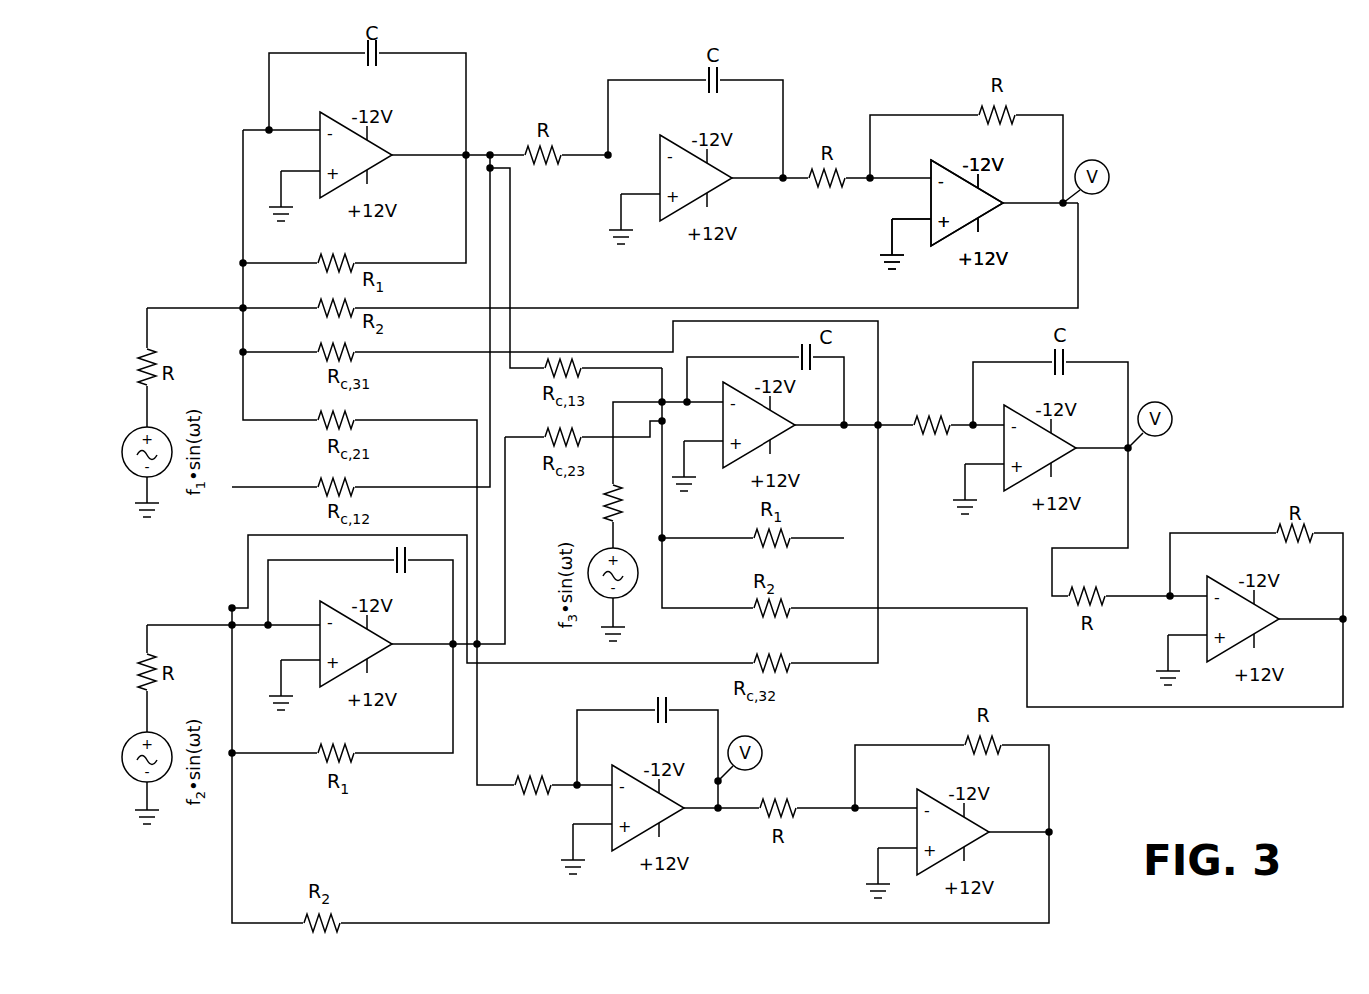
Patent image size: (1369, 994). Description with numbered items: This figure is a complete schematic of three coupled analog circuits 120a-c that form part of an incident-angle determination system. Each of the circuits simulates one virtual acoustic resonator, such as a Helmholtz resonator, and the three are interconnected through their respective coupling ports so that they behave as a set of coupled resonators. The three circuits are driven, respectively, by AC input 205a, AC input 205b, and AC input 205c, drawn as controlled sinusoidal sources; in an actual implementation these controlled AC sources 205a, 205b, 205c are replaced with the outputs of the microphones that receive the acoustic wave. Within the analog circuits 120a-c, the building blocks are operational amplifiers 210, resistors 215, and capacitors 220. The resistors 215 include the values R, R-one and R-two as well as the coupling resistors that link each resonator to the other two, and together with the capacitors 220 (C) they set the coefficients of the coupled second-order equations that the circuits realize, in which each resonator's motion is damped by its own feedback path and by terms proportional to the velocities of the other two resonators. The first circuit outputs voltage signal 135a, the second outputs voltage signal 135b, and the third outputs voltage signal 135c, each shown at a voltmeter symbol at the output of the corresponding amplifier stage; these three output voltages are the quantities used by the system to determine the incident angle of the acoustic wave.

The coupled analog circuits 120a-c is at (1195, 165).
The voltage signal 135a is at (1109, 180).
The voltage signal 135b is at (762, 748).
The voltage signal 135c is at (1172, 422).
The AC input 205a is at (130, 432).
The AC input 205b is at (130, 777).
The AC input 205c is at (632, 592).
The operational amplifiers 210 is at (734, 182).
The resistors 215 is at (942, 435).
The capacitors 220 is at (1066, 356).